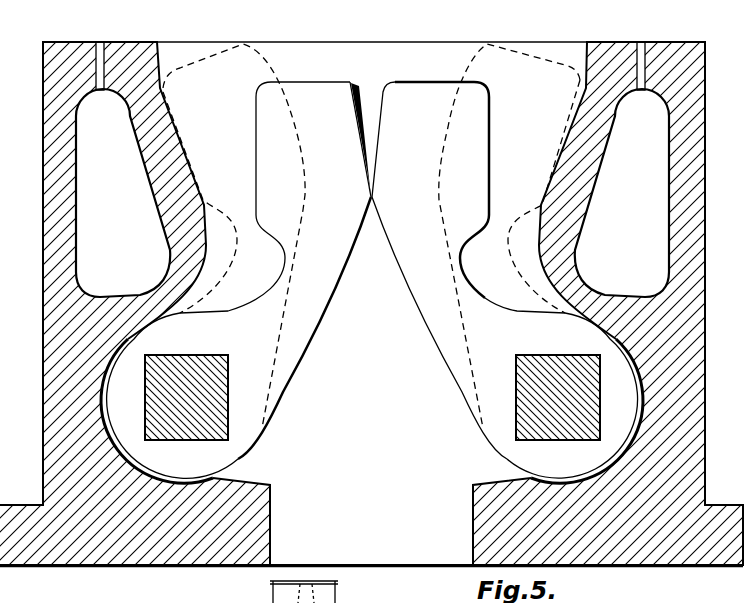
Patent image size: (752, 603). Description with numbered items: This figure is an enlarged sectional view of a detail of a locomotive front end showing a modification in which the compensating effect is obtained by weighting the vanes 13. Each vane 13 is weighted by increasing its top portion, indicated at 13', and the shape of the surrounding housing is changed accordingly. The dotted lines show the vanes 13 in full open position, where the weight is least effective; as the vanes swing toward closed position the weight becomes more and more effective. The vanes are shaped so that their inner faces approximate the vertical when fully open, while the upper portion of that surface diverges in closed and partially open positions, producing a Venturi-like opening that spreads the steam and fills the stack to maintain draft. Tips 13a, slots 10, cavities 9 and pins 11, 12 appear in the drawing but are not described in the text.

The cavity 9 is at (372, 193).
The slot 10 is at (100, 42).
The pin 11 is at (212, 333).
The pin 12 is at (562, 336).
The vanes 13 is at (372, 280).
The increased top portion of vane 13' is at (371, 236).
The tip of gripping member 13a is at (381, 108).